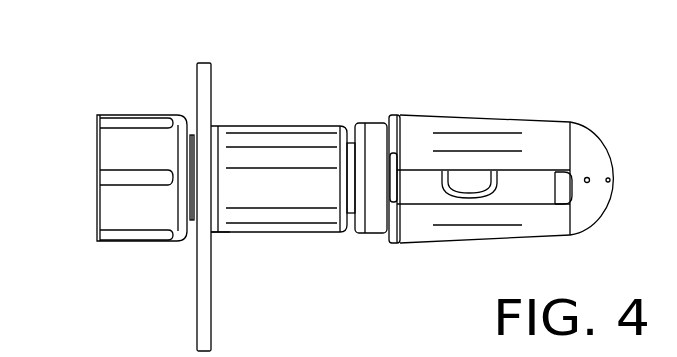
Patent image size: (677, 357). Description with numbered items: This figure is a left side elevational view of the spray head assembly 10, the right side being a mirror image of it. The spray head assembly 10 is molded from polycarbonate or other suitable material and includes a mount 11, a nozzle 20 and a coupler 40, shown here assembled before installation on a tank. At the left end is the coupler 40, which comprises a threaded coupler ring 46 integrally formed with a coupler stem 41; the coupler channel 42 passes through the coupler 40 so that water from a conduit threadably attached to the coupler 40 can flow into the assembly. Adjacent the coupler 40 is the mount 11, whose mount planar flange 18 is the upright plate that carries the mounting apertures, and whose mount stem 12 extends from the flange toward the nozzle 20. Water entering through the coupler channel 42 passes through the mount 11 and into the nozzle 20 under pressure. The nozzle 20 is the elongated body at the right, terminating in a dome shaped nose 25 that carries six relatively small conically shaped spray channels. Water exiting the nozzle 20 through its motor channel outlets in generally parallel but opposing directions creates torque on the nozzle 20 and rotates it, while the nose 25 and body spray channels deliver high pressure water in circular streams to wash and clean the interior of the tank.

The spray head assembly 10 is at (498, 79).
The mount 11 is at (231, 252).
The mount stem 12 is at (265, 125).
The mount planar flange 18 is at (213, 61).
The nozzle 20 is at (555, 110).
The dome shaped nose 25 is at (598, 150).
The coupler 40 is at (114, 96).
The coupler stem 41 is at (192, 134).
The coupler channel 42 is at (95, 159).
The threaded coupler ring 46 is at (113, 221).